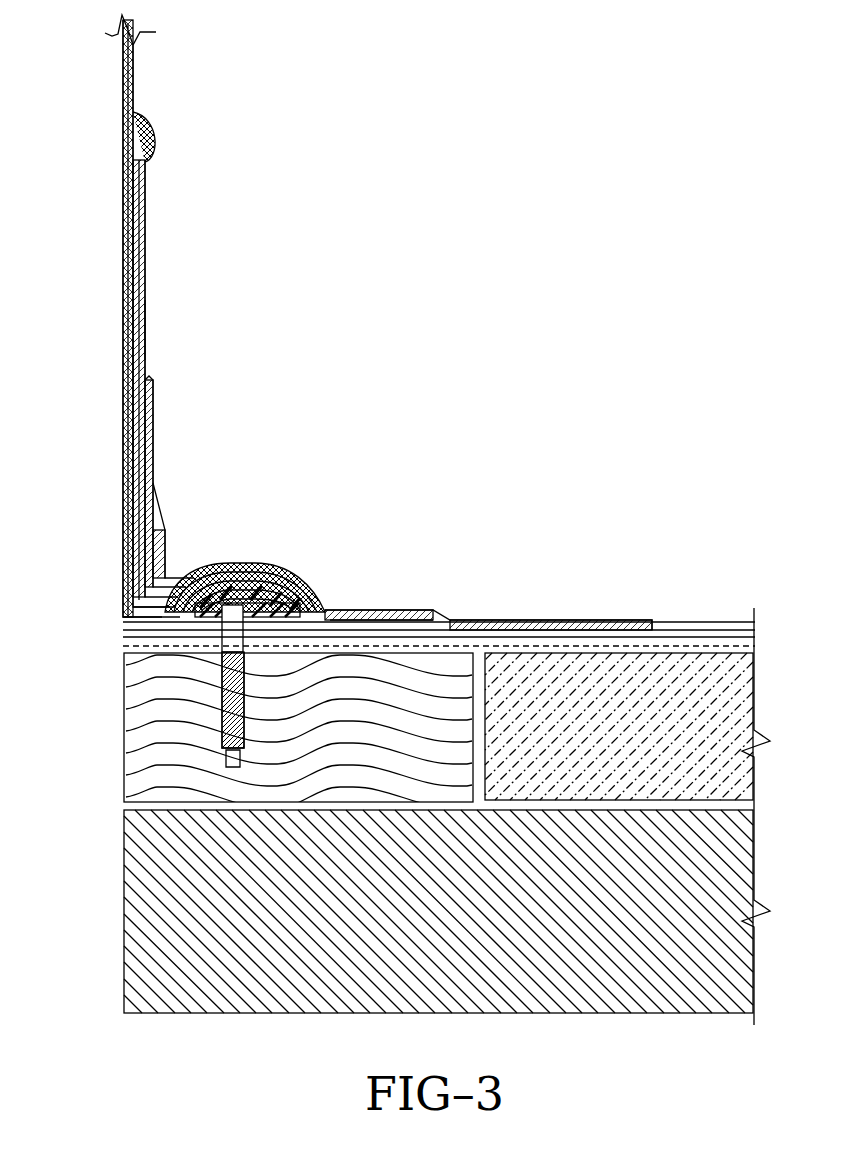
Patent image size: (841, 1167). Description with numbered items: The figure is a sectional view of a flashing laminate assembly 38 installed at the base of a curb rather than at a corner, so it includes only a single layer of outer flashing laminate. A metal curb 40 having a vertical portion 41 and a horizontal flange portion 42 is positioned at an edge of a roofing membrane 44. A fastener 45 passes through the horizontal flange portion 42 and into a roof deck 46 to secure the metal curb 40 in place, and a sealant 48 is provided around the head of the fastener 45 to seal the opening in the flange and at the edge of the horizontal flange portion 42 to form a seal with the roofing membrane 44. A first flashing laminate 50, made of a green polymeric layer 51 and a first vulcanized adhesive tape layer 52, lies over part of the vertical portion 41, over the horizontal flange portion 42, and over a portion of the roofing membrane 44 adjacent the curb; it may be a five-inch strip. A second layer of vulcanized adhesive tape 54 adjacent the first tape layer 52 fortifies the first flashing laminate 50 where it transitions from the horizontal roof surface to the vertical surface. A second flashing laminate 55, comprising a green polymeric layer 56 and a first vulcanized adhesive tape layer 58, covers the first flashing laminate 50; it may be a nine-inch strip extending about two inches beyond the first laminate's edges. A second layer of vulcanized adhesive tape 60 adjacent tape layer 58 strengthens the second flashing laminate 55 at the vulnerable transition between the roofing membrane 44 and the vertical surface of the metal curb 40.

The flashing laminate assembly 38 is at (272, 372).
The metal curb 40 is at (125, 83).
The vertical portion 41 is at (128, 190).
The horizontal flange portion 42 is at (165, 620).
The roofing membrane 44 is at (718, 636).
The fastener 45 is at (225, 700).
The roof deck 46 is at (150, 780).
The sealant 48 is at (200, 632).
The first flashing laminate 50 is at (128, 403).
The green polymeric layer 51 is at (150, 435).
The first vulcanized adhesive tape layer 52 is at (130, 430).
The second layer of vulcanized adhesive tape 54 is at (128, 548).
The second flashing laminate 55 is at (147, 225).
The green polymeric layer 56 is at (147, 328).
The first vulcanized adhesive tape layer 58 is at (658, 628).
The second layer of vulcanized adhesive tape 60 is at (235, 565).